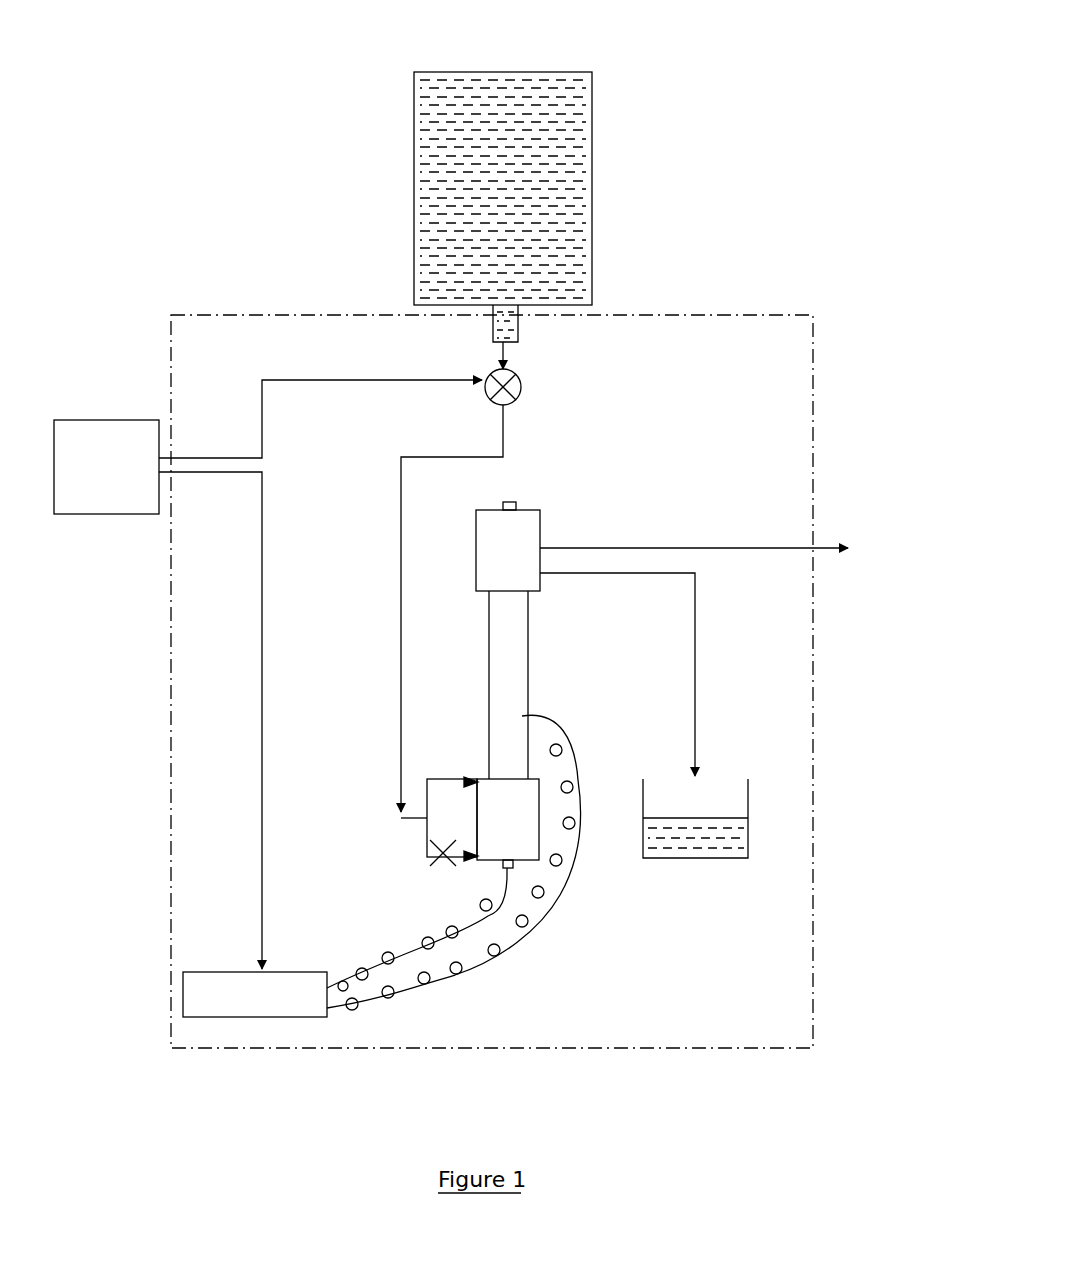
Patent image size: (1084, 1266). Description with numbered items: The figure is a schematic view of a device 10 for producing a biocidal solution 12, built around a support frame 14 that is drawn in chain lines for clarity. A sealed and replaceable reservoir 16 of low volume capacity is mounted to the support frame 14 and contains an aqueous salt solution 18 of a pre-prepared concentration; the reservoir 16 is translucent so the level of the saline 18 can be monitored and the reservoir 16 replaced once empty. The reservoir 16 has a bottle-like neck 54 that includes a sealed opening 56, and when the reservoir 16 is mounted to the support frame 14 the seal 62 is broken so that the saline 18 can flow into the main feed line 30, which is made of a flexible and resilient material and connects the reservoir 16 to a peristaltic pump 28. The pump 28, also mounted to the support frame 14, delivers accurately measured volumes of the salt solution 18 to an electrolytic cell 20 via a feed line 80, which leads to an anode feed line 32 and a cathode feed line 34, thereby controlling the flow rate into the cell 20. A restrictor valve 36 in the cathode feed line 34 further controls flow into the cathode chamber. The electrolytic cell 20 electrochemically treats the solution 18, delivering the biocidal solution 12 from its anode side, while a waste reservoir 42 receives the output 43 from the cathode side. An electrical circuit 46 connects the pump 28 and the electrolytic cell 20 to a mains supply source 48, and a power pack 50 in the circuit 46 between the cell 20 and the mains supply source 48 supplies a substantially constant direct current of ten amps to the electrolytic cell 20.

The device 10 is at (818, 95).
The biocidal solution 12 is at (730, 569).
The support frame 14 is at (738, 316).
The reservoir 16 is at (592, 82).
The aqueous salt solution 18 is at (578, 188).
The electrolytic cell 20 is at (546, 505).
The peristaltic pump 28 is at (490, 398).
The main feed line 30 is at (512, 348).
The anode feed line 32 is at (444, 778).
The cathode feed line 34 is at (430, 834).
The restrictor valve 36 is at (443, 860).
The waste reservoir 42 is at (752, 793).
The output 43 is at (696, 842).
The electrical circuit 46 is at (262, 728).
The mains supply source 48 is at (66, 432).
The power pack 50 is at (183, 994).
The neck 54 is at (493, 338).
The sealed opening 56 is at (497, 342).
The seal 62 is at (508, 344).
The feed line 80 is at (401, 496).